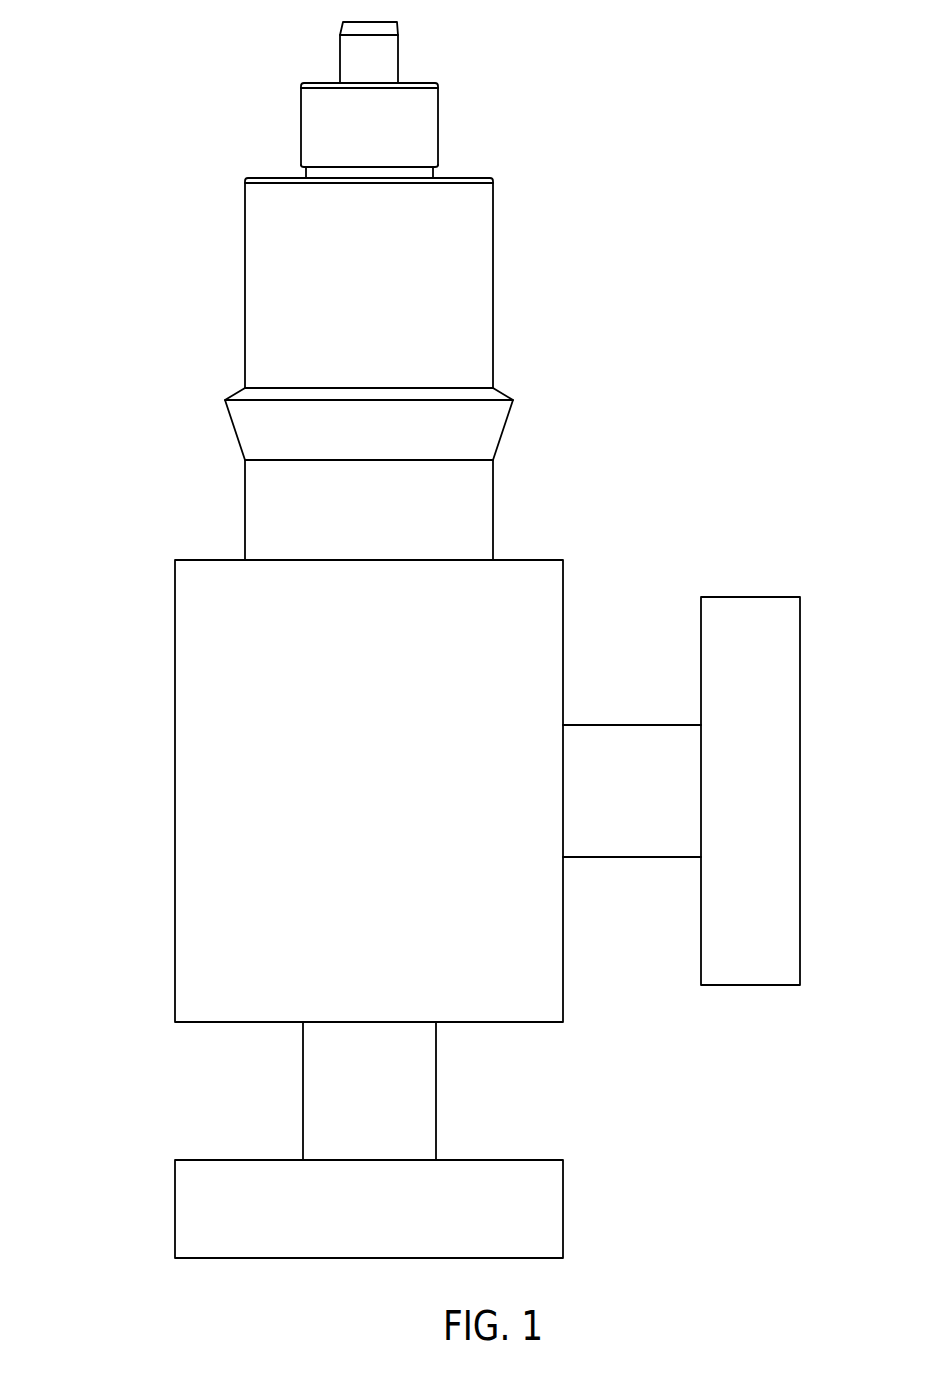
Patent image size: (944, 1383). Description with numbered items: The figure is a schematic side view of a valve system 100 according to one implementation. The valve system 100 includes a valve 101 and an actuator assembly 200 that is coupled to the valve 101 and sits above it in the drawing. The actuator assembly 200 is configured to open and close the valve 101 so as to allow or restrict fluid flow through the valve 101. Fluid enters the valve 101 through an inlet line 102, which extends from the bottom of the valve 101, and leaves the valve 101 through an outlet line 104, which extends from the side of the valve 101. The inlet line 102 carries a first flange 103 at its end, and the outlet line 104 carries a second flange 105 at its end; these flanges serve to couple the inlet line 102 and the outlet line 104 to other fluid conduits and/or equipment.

The valve system 100 is at (661, 91).
The actuator assembly 200 is at (499, 144).
The valve 101 is at (565, 580).
The inlet line 102 is at (286, 1077).
The first flange 103 is at (190, 1208).
The outlet line 104 is at (642, 711).
The second flange 105 is at (762, 597).